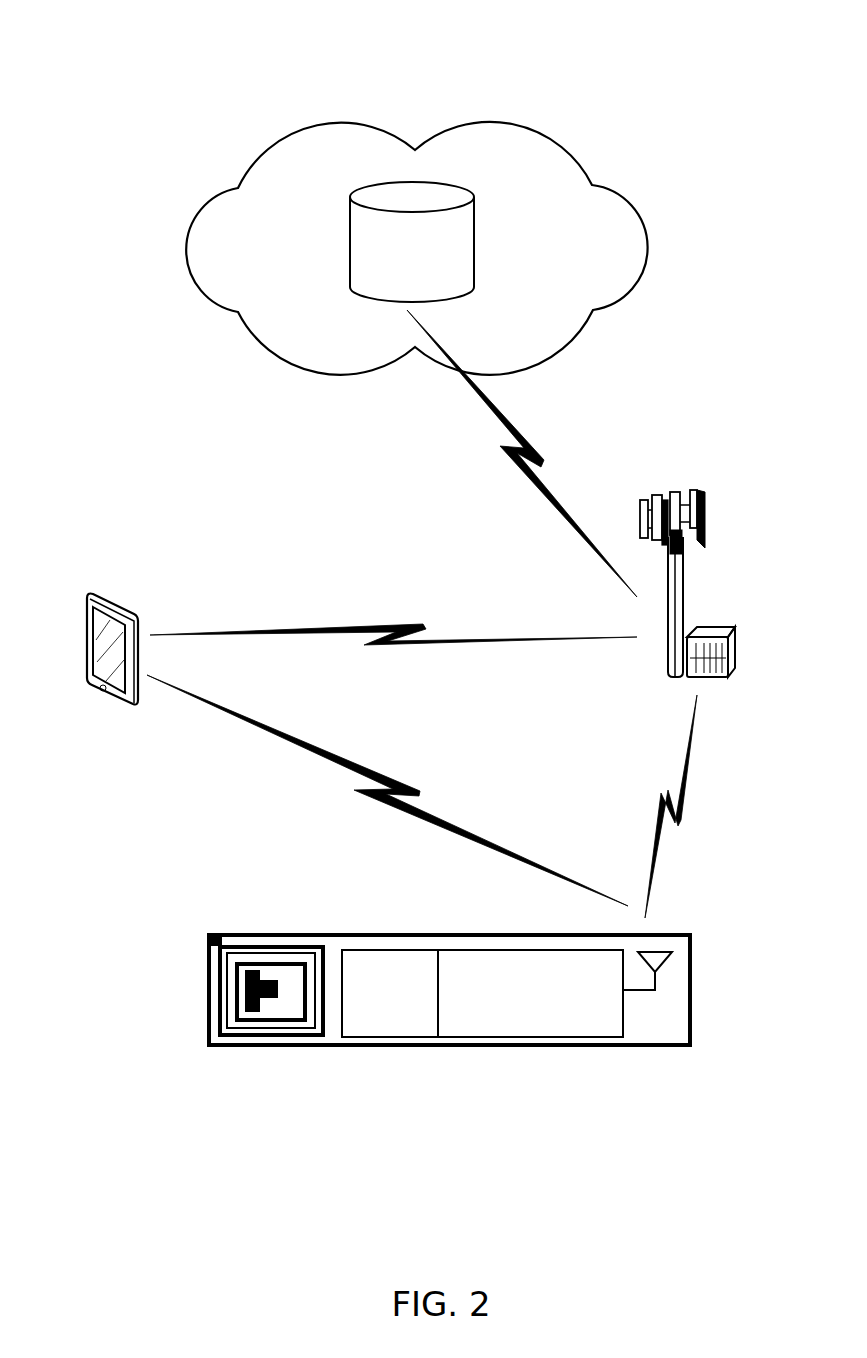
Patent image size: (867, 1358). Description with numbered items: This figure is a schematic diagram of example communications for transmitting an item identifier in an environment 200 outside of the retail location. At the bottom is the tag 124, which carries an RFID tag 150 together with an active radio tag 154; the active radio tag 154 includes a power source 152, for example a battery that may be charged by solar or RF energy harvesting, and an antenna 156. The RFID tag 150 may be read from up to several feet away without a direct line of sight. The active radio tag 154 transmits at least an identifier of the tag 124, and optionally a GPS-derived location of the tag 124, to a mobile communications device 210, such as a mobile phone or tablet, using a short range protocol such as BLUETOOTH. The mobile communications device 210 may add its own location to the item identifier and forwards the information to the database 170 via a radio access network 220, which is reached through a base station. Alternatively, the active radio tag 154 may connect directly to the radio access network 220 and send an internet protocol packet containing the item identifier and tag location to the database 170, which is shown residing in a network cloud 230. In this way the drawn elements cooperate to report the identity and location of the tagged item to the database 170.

The environment 200 is at (63, 62).
The database 170 is at (350, 224).
The network cloud 230 is at (665, 235).
The mobile communications device 210 is at (142, 594).
The radio access network 220 is at (733, 630).
The tag 124 is at (312, 933).
The RFID tag 150 is at (292, 1038).
The power source 152 is at (393, 1038).
The active radio tag 154 is at (528, 1038).
The antenna 156 is at (645, 992).